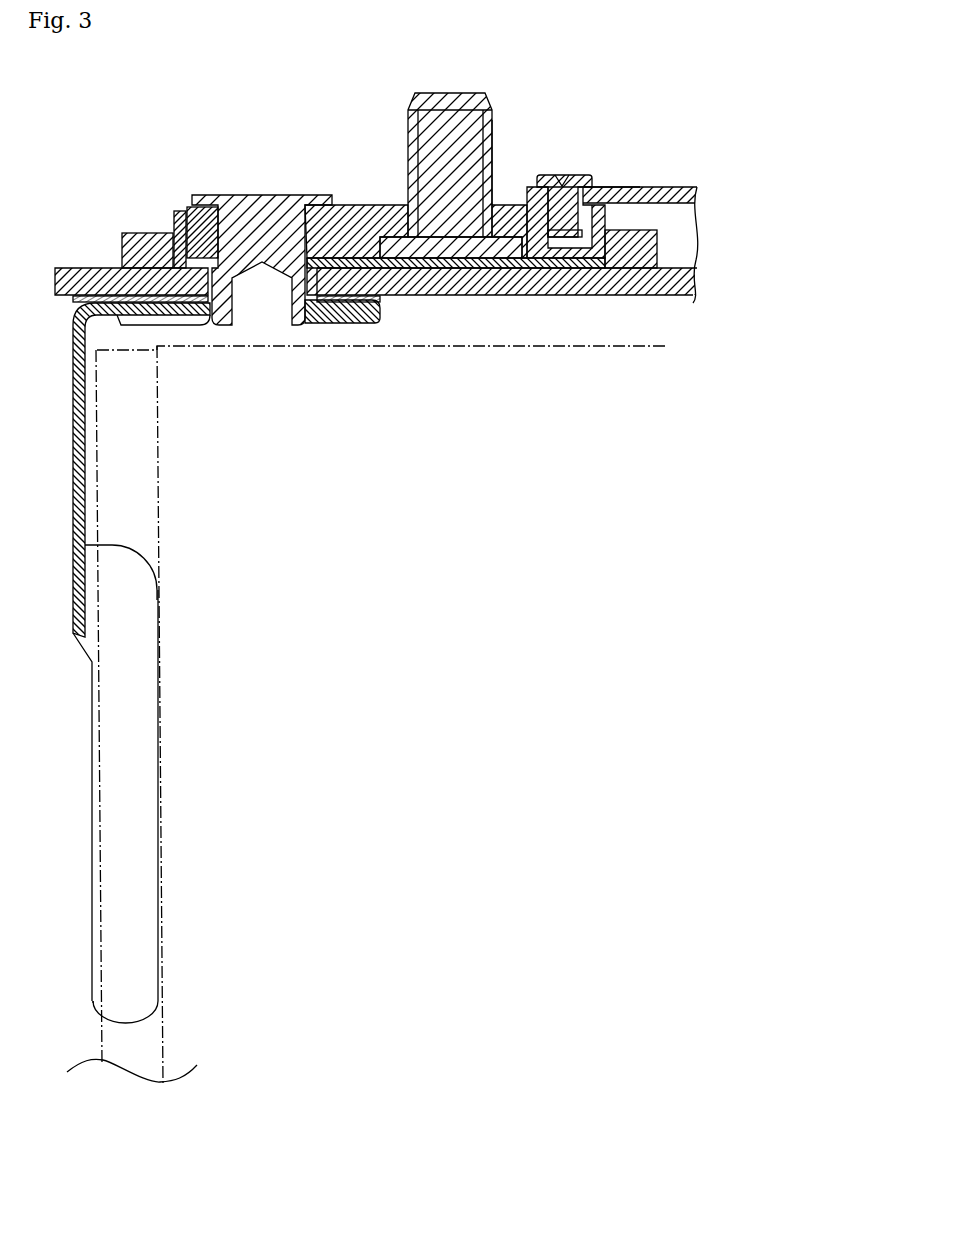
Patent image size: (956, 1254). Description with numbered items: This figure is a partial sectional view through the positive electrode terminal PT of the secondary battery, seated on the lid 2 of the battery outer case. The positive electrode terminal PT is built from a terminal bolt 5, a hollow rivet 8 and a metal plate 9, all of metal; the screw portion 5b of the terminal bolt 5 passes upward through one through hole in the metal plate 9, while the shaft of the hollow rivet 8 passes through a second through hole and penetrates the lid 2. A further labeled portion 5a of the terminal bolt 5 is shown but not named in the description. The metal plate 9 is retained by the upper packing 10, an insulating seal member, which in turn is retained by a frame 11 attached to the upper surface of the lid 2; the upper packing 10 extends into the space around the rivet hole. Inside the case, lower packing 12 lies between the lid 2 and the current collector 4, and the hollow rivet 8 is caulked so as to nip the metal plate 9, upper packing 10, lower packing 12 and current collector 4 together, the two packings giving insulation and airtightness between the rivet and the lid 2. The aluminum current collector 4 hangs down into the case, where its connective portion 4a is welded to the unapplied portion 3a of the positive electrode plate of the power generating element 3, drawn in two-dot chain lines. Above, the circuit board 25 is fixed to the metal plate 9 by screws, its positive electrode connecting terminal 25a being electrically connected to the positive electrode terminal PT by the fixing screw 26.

The lid 2 is at (85, 268).
The power generating element 3 is at (585, 346).
The unapplied portion 3a is at (153, 1038).
The current collector 4 is at (184, 752).
The connective portion 4a is at (157, 683).
The terminal bolt 5 is at (401, 117).
The pin flange 5a is at (437, 252).
The screw portion 5b is at (492, 148).
The hollow rivet 8 is at (255, 195).
The metal plate 9 is at (350, 205).
The upper packing 10 is at (175, 211).
The frame 11 is at (140, 233).
The lower packing 12 is at (378, 303).
The circuit board 25 is at (665, 187).
The positive electrode connecting terminal 25a is at (602, 184).
The fixing screw 26 is at (568, 175).
The positive electrode terminal PT is at (550, 100).